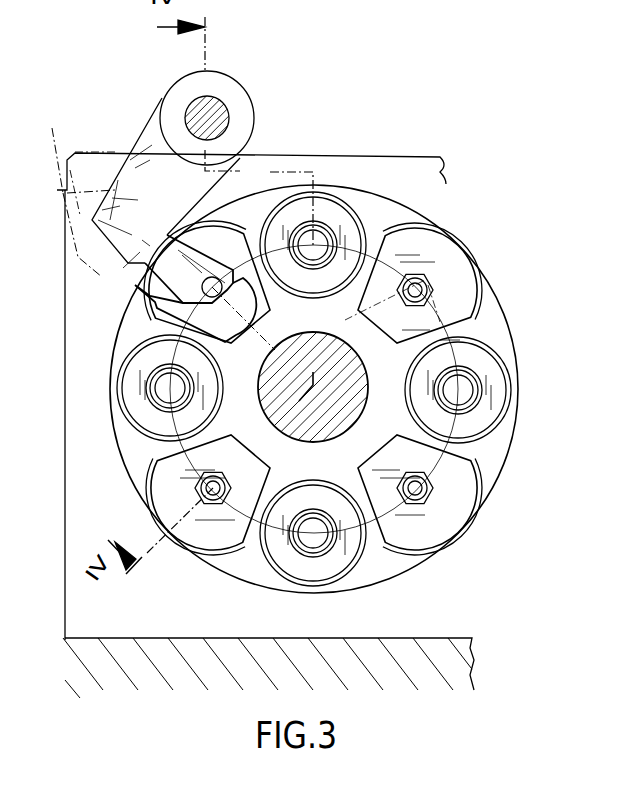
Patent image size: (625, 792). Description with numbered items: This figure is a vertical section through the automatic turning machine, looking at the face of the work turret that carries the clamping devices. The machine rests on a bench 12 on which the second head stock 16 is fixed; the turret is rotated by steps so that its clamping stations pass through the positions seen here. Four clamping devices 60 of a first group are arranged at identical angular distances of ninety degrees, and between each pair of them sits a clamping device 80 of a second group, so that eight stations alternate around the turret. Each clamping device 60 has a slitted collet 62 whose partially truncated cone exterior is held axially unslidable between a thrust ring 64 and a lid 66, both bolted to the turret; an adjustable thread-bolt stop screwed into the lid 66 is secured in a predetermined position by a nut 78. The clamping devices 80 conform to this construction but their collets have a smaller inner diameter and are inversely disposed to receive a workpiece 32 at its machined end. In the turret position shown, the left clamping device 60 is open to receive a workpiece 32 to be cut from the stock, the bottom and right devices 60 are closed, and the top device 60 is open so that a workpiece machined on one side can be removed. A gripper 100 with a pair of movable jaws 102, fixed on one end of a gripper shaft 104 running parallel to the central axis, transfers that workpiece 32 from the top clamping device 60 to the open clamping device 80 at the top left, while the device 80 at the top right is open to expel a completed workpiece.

The bench 12 is at (137, 660).
The second head stock 16 is at (302, 160).
The workpiece 32 is at (224, 322).
The clamping device 60 is at (348, 185).
The collet 62 is at (152, 383).
The thrust ring 64 is at (121, 322).
The lid 66 is at (156, 481).
The nut 78 is at (201, 483).
The clamping device 80 is at (452, 236).
The gripper 100 is at (138, 153).
The movable jaws 102 is at (182, 232).
The gripper shaft 104 is at (190, 108).